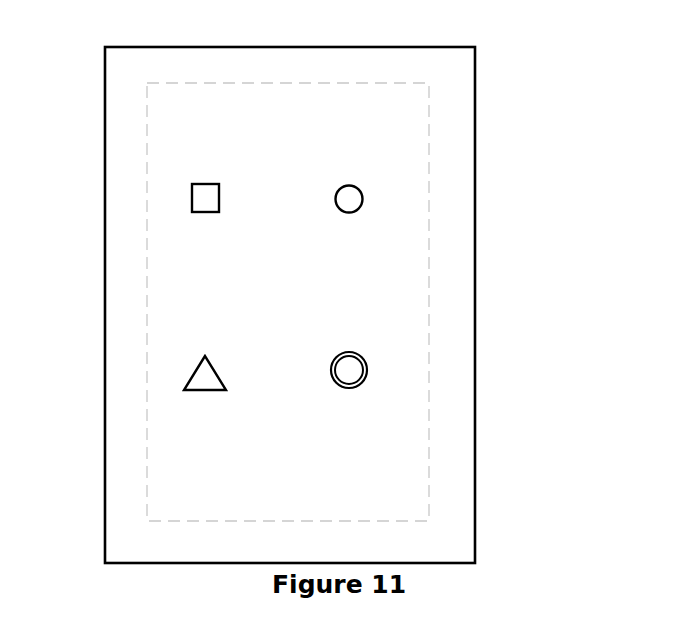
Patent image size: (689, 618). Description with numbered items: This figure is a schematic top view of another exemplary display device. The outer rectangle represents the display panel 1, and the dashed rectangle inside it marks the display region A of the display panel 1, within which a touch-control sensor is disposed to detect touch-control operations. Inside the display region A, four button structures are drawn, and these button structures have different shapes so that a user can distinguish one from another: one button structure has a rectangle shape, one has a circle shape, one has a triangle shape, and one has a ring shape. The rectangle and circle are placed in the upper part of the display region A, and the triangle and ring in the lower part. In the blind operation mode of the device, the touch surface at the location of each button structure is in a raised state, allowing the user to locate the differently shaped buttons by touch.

The display panel 1 is at (475, 313).
The display region A is at (429, 217).